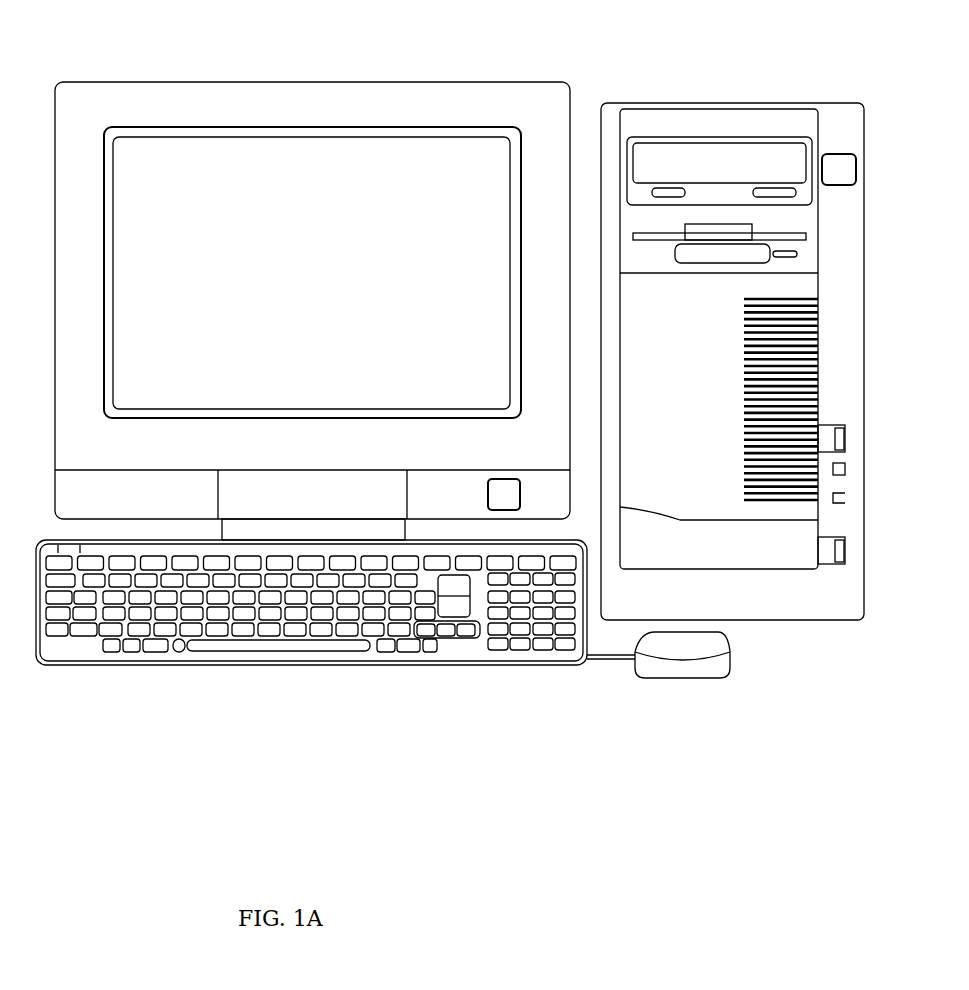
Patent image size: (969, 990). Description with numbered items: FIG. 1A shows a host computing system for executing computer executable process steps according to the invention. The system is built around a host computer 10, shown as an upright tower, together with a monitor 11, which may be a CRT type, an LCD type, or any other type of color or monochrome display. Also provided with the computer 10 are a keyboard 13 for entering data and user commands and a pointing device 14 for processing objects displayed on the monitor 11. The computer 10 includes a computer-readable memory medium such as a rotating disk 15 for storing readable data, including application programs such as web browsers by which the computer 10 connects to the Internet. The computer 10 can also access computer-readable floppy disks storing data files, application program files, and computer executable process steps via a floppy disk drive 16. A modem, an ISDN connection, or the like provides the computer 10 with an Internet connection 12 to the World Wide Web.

The host computer 10 is at (813, 620).
The monitor 11 is at (297, 126).
The Internet connection 12 is at (835, 505).
The keyboard 13 is at (183, 663).
The pointing device 14 is at (655, 673).
The rotating disk 15 is at (690, 183).
The floppy disk drive 16 is at (748, 252).